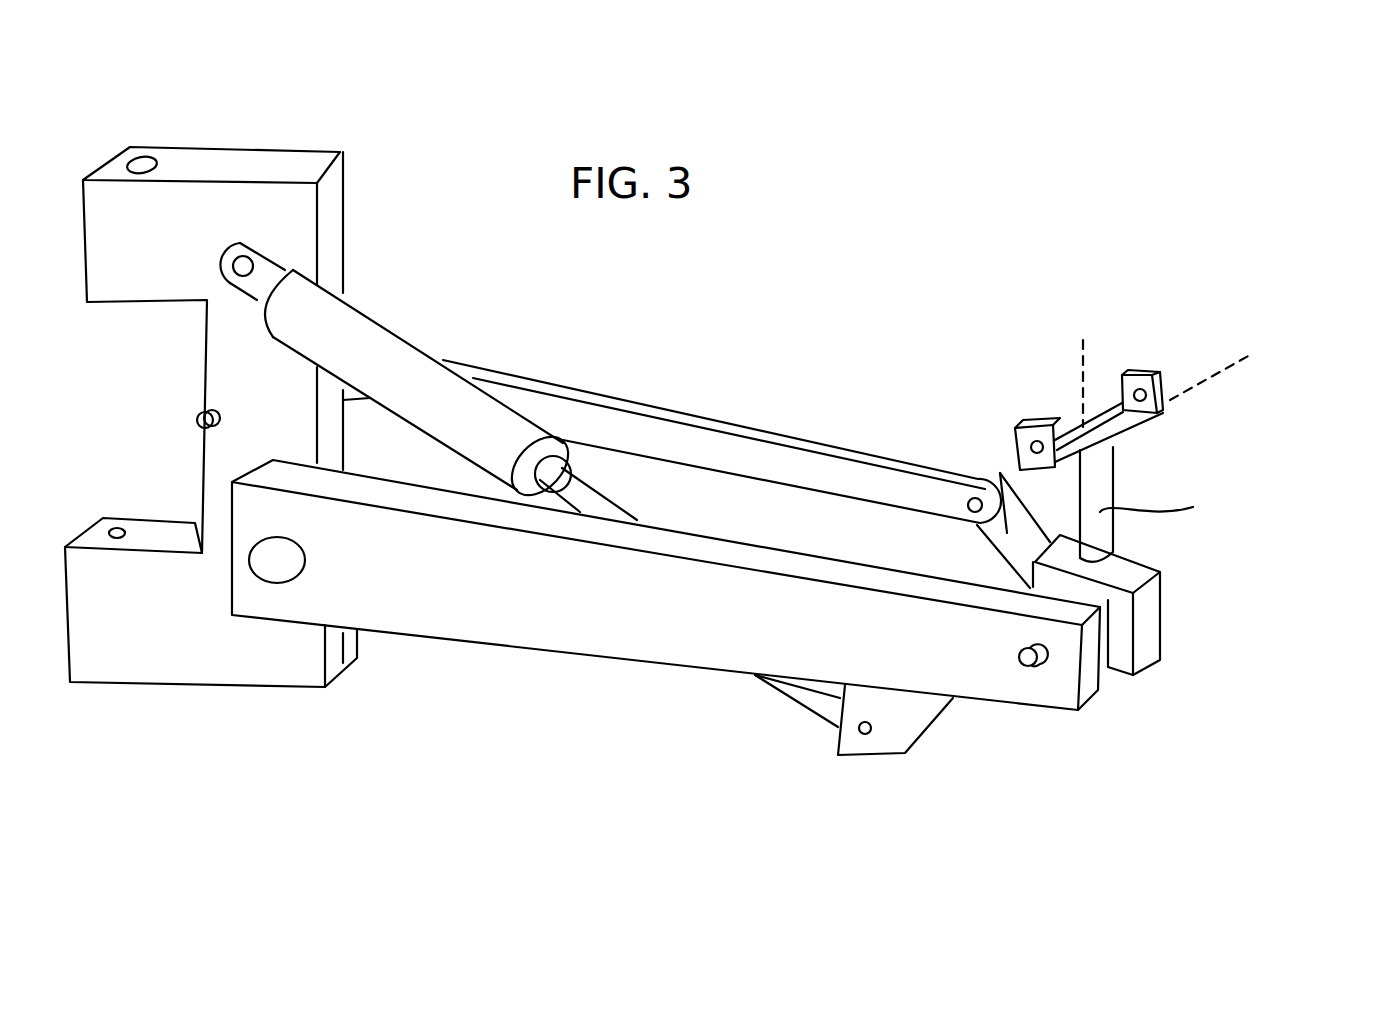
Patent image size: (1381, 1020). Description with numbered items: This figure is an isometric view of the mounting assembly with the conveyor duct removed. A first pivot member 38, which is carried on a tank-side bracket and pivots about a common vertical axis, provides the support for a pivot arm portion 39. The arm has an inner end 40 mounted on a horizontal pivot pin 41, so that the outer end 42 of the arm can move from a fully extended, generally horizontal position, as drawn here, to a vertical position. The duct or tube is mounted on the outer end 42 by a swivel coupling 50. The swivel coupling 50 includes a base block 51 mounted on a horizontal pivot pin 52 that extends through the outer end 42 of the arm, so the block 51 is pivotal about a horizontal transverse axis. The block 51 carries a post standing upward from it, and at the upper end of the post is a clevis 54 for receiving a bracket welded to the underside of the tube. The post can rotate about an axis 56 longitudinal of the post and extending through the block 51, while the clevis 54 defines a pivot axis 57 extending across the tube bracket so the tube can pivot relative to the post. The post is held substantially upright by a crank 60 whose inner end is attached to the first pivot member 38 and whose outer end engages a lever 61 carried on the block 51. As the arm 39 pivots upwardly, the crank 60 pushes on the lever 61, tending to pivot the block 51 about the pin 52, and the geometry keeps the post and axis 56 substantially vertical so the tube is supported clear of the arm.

The first pivot member 38 is at (268, 128).
The pivot arm portion 39 is at (522, 628).
The inner end 40 is at (317, 590).
The horizontal pivot pin 41 is at (263, 567).
The outer end 42 is at (967, 683).
The swivel coupling 50 is at (1170, 478).
The base block 51 is at (1150, 630).
The horizontal pivot pin 52 is at (1028, 660).
The clevis 54 is at (1143, 357).
The axis 56 is at (1073, 383).
The pivot axis 57 is at (1222, 366).
The crank 60 is at (797, 452).
The lever 61 is at (997, 468).